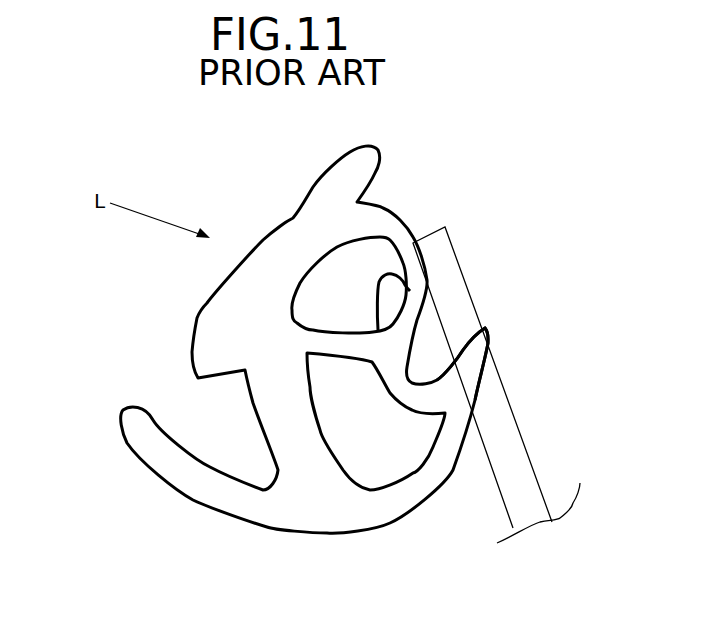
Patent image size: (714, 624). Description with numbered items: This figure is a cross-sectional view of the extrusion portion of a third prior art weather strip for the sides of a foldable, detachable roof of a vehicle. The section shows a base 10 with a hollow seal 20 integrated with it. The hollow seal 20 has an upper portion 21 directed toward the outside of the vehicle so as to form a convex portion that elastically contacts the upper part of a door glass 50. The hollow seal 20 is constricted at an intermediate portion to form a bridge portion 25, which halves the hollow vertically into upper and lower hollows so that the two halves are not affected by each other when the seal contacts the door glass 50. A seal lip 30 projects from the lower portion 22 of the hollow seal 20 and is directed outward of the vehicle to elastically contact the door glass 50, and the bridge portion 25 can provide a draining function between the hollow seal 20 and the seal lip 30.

The base 10 is at (308, 245).
The hollow seal 20 is at (356, 443).
The upper portion 21 is at (342, 295).
The lower portion 22 is at (400, 455).
The bridge portion 25 is at (352, 348).
The seal lip 30 is at (447, 388).
The door glass 50 is at (517, 460).